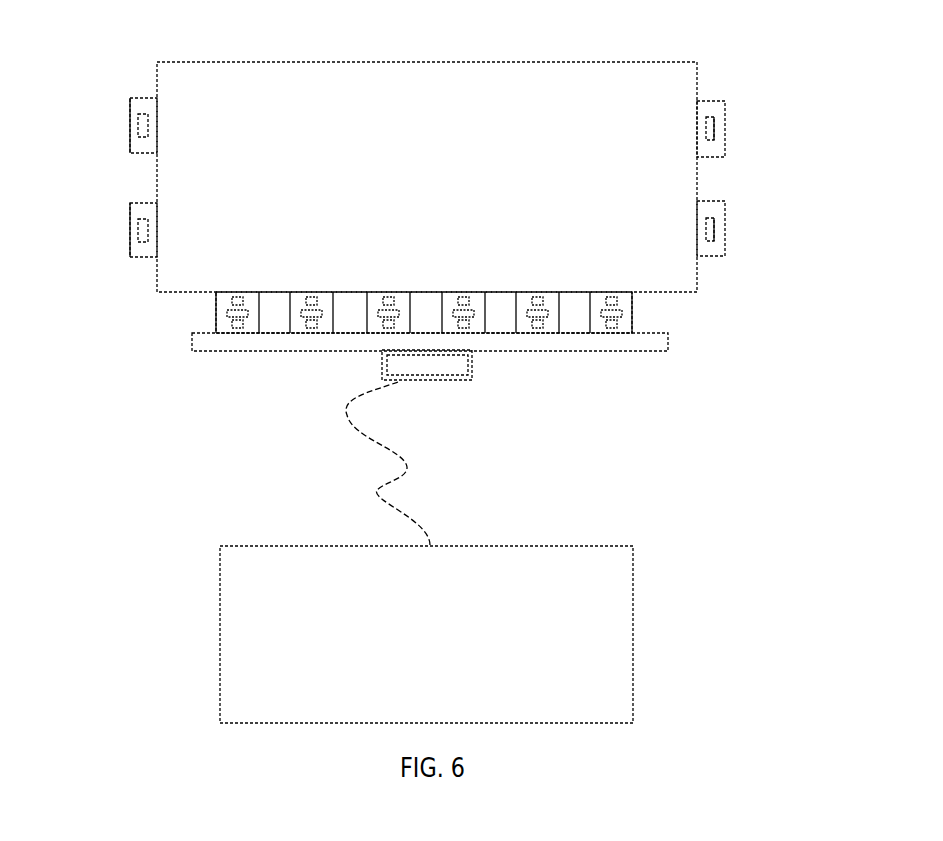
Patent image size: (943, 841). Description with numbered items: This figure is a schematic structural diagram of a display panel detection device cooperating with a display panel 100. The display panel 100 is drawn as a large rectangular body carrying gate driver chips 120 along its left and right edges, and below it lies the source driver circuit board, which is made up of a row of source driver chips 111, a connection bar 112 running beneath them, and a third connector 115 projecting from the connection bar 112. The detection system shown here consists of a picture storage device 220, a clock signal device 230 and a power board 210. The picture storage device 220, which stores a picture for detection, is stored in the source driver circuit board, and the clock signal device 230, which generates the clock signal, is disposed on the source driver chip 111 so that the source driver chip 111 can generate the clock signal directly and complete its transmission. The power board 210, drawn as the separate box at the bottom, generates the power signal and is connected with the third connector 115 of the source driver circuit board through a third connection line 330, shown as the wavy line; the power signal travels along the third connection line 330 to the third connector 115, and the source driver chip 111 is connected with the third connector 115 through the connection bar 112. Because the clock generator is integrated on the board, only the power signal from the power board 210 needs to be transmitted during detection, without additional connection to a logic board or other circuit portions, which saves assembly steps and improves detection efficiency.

The display panel 100 is at (157, 177).
The source driver chip 111 is at (216, 311).
The connection bar 112 is at (192, 347).
The third connector 115 is at (383, 368).
The gate driver chip 120 is at (143, 98).
The power board 210 is at (220, 645).
The picture storage device 220 is at (618, 300).
The clock signal device 230 is at (618, 322).
The third connection line 330 is at (373, 488).